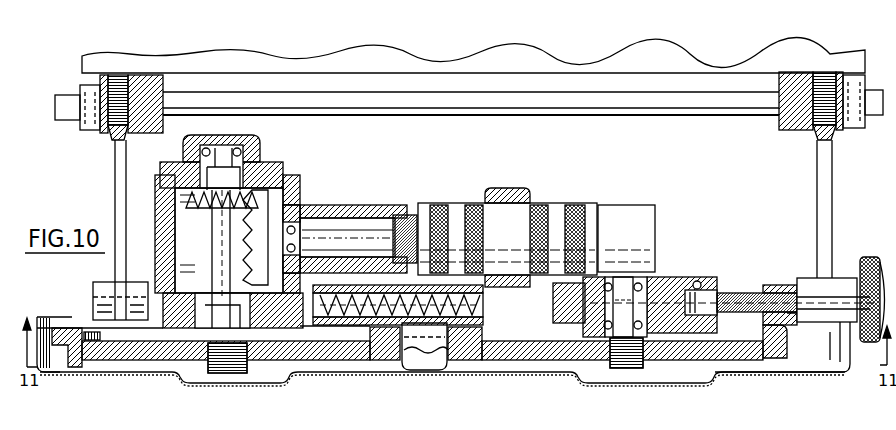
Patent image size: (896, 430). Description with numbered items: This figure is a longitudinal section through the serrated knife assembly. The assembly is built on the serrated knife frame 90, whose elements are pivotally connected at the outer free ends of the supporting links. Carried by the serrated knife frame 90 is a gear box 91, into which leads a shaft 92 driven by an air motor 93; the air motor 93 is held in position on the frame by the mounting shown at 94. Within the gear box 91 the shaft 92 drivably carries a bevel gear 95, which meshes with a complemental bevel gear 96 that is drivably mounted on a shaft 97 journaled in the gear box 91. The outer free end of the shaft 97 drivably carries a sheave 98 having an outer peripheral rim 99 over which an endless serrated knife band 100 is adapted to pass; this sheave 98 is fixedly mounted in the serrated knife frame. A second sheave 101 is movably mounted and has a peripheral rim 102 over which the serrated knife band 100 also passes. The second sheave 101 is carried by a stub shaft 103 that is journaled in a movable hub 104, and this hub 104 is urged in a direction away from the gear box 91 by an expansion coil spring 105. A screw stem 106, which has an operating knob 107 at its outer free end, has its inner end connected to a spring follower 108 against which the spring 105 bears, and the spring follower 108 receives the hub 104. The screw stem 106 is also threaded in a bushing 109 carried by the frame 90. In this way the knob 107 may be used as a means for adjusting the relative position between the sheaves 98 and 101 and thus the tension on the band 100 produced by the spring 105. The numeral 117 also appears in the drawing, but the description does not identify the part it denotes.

The serrated knife frame 90 is at (132, 297).
The gear box 91 is at (297, 178).
The shaft 92 is at (338, 237).
The air motor 93 is at (553, 205).
The mounting 94 is at (513, 188).
The bevel gear 95 is at (288, 266).
The complemental bevel gear 96 is at (207, 204).
The shaft 97 is at (218, 245).
The sheave 98 is at (163, 350).
The outer peripheral rim 99 is at (77, 357).
The endless serrated knife band 100 is at (452, 357).
The second sheave 101 is at (683, 352).
The peripheral rim 102 is at (775, 352).
The stub shaft 103 is at (630, 307).
The movable hub 104 is at (663, 283).
The expansion coil spring 105 is at (372, 293).
The screw stem 106 is at (745, 292).
The operating knob 107 is at (858, 257).
The spring follower 108 is at (715, 282).
The bushing 109 is at (777, 287).
The cover sheet 117 is at (437, 429).